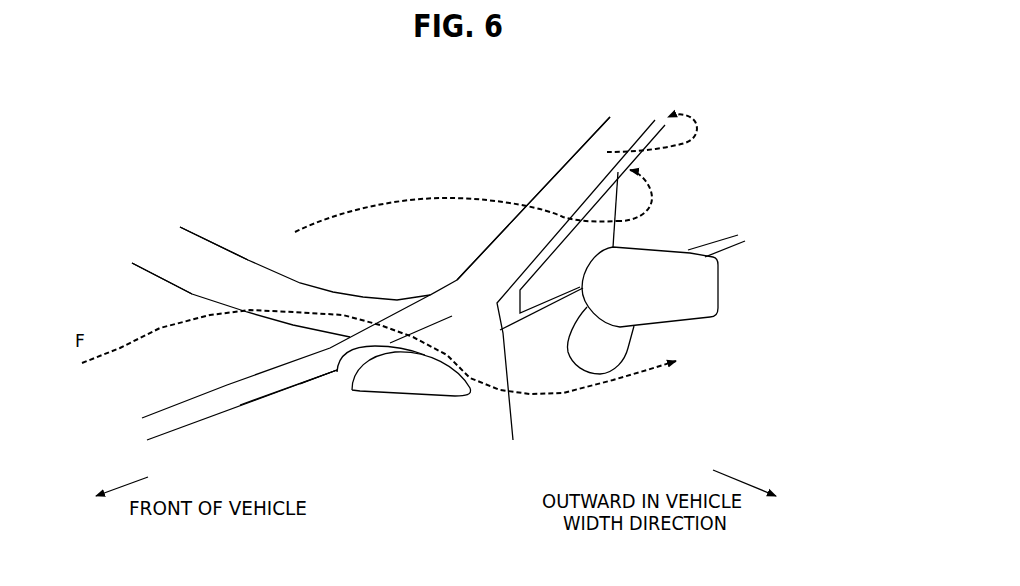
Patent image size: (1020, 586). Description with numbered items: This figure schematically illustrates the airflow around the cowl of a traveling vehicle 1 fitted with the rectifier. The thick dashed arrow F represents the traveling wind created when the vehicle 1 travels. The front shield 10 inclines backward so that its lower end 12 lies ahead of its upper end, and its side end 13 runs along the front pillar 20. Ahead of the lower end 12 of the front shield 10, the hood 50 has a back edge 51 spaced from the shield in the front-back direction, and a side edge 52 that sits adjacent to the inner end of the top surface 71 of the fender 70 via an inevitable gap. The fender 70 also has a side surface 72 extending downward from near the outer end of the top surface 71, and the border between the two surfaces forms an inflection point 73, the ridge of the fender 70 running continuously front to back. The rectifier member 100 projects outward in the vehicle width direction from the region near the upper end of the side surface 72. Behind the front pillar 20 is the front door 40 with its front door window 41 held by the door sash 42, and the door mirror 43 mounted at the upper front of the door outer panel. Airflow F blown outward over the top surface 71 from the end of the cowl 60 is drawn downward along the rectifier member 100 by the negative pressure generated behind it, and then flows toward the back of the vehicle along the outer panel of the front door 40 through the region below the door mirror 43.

The vehicle 1 is at (177, 150).
The front shield 10 is at (394, 173).
The lower end 12 is at (273, 270).
The side end 13 is at (540, 182).
The front pillar 20 is at (595, 142).
The front door 40 is at (709, 358).
The front door window 41 is at (679, 187).
The door sash 42 is at (652, 137).
The door mirror 43 is at (717, 293).
The hood 50 is at (122, 313).
The back edge 51 is at (192, 294).
The side edge 52 is at (227, 385).
The cowl 60 is at (253, 283).
The fender 70 is at (318, 417).
The top surface 71 is at (262, 387).
The side surface 72 is at (277, 412).
The inflection point 73 is at (322, 378).
The rectifier member 100 is at (408, 393).